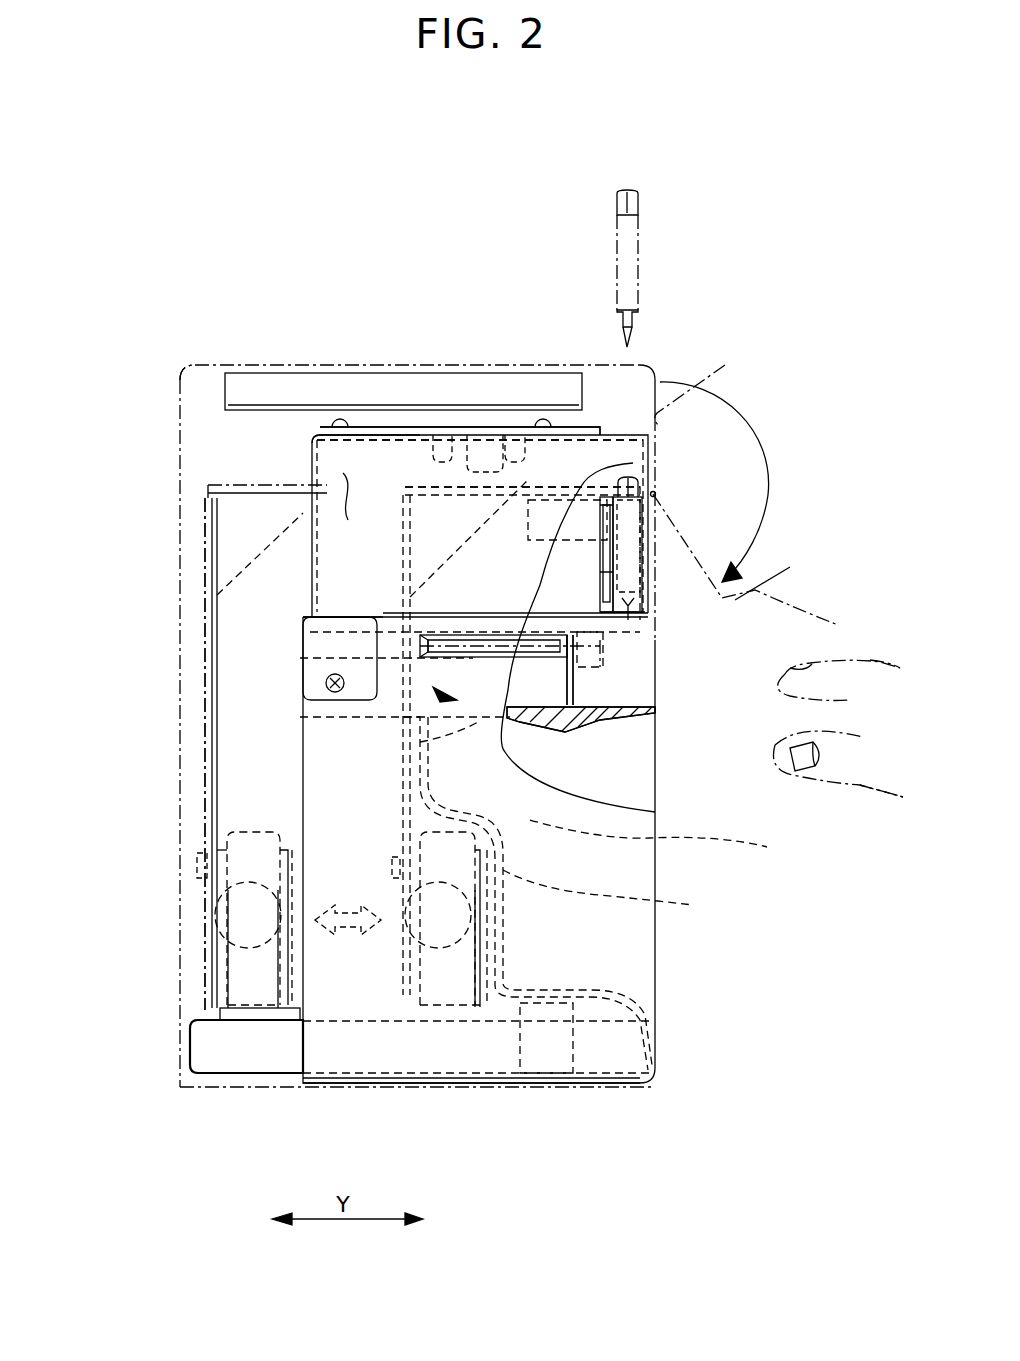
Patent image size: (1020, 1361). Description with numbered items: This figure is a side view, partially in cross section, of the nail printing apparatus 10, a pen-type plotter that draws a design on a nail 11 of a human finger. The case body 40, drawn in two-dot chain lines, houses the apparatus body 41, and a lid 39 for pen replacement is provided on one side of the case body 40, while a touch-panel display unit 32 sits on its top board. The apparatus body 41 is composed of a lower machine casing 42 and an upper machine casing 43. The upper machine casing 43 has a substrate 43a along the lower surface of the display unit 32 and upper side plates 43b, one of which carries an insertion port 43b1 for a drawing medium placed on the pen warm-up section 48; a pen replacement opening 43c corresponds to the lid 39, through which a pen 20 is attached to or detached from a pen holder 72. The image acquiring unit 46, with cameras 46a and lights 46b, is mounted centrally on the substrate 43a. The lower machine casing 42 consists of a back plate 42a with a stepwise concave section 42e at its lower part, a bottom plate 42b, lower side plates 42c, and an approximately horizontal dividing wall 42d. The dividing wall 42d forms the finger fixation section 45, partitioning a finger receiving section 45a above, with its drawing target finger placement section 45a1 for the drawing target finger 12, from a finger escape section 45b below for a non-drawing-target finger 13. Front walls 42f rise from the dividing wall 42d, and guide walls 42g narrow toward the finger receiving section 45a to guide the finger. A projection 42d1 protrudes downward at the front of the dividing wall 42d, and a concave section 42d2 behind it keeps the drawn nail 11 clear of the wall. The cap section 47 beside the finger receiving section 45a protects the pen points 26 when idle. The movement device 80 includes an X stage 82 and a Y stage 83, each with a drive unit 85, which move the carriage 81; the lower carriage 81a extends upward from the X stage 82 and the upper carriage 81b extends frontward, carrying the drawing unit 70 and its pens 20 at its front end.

The nail printing apparatus 10 is at (150, 295).
The nail 11 is at (792, 668).
The drawing target finger 12 is at (878, 675).
The non-drawing-target finger 13 is at (875, 790).
The pen 20 is at (633, 192).
The pen point 26 is at (627, 623).
The display unit 32 is at (330, 378).
The lid 39 is at (758, 502).
The case body 40 is at (192, 360).
The apparatus body 41 is at (440, 1090).
The lower machine casing 42 is at (648, 953).
The back plate 42a is at (619, 894).
The bottom plate 42b is at (518, 1087).
The lower side plate 42c is at (630, 850).
The dividing wall 42d is at (600, 740).
The projection 42d1 is at (597, 720).
The concave section 42d2 is at (600, 752).
The concave section 42e is at (500, 1017).
The front wall 42f is at (400, 690).
The guide wall 42g is at (610, 675).
The upper machine casing 43 is at (610, 657).
The substrate 43a is at (364, 432).
The upper side plate 43b is at (340, 455).
The insertion port 43b1 is at (390, 620).
The pen replacement opening 43c is at (622, 468).
The finger fixation section 45 is at (560, 718).
The finger receiving section 45a is at (560, 655).
The drawing target finger placement section 45a1 is at (520, 720).
The finger escape section 45b is at (674, 838).
The image acquiring unit 46 is at (408, 418).
The camera 46a is at (480, 440).
The light 46b is at (440, 440).
The cap section 47 is at (647, 653).
The pen warm-up section 48 is at (520, 618).
The drawing unit 70 is at (575, 450).
The pen holder 72 is at (643, 563).
The movement device 80 is at (175, 1090).
The carriage 81 is at (290, 808).
The lower carriage 81a is at (290, 765).
The upper carriage 81b is at (440, 487).
The X stage 82 is at (248, 992).
The Y stage 83 is at (238, 1053).
The drive unit 85 is at (235, 928).